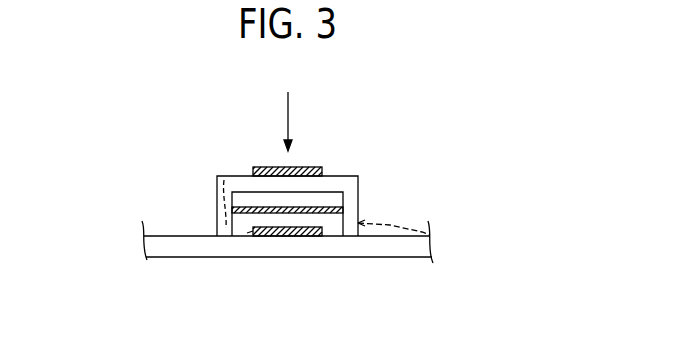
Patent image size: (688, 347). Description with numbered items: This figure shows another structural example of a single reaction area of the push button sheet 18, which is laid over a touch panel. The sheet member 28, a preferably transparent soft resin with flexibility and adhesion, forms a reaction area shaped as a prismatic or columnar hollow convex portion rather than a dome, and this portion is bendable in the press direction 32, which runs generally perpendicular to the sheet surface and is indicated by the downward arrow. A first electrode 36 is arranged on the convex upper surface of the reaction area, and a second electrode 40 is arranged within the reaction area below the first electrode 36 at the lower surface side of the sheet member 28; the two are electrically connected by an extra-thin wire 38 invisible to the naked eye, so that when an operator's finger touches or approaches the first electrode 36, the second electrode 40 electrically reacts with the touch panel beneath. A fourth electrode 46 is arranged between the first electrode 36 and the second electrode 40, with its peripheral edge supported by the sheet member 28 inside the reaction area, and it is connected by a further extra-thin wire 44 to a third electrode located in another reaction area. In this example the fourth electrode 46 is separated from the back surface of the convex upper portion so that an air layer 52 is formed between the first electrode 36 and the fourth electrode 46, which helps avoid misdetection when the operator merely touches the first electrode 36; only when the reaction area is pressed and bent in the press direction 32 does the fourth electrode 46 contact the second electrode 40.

The push button sheet 18 is at (104, 209).
The sheet member 28 is at (182, 234).
The press direction 32 is at (289, 114).
The first electrode 36 is at (260, 167).
The extra-thin wire 38 is at (253, 232).
The second electrode 40 is at (305, 238).
The extra-thin wire 44 is at (393, 223).
The fourth electrode 46 is at (343, 193).
The air layer 52 is at (307, 197).